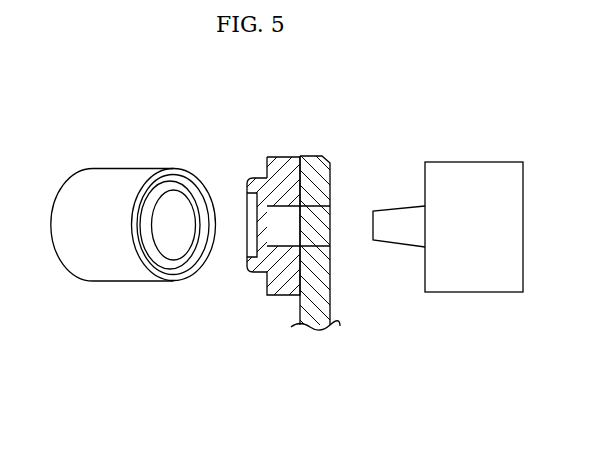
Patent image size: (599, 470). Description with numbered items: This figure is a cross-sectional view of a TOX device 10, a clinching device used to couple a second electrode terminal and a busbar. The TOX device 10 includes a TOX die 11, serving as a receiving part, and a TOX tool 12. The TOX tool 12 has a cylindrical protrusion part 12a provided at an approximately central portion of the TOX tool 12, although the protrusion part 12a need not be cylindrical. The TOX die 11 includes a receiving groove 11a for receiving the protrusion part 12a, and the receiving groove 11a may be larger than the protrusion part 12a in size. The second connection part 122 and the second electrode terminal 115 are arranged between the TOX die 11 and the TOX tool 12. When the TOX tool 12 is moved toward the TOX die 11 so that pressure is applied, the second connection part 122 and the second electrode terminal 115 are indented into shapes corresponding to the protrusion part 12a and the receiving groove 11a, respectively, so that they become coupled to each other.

The TOX device 10 is at (287, 262).
The TOX die 11 is at (137, 248).
The receiving groove 11a is at (183, 176).
The second connection part 122 is at (262, 178).
The second electrode terminal 115 is at (318, 158).
The TOX tool 12 is at (441, 268).
The protrusion part 12a is at (395, 213).